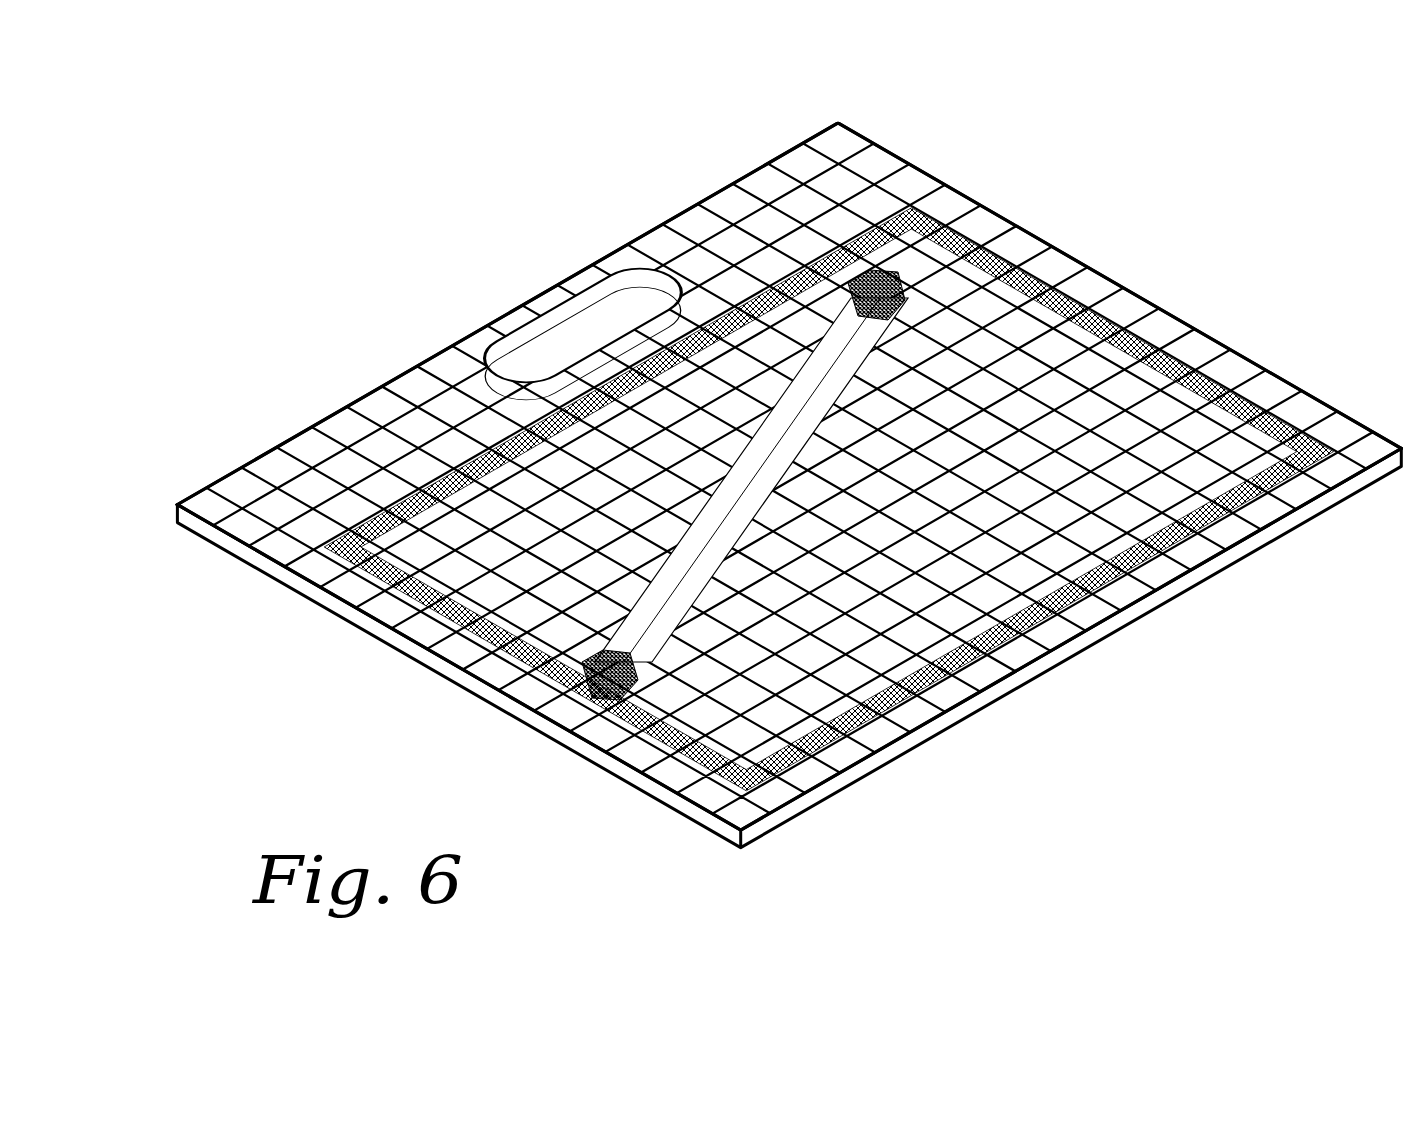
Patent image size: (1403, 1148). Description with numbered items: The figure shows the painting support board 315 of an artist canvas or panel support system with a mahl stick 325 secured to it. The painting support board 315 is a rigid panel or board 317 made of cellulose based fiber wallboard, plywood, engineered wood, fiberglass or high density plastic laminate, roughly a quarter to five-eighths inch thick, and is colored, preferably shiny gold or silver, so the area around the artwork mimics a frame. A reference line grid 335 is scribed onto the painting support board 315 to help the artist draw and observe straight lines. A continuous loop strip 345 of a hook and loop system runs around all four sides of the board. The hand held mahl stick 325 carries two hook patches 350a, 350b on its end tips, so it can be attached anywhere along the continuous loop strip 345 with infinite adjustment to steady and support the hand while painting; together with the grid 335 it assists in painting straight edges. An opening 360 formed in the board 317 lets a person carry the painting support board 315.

The painting support board 315 is at (823, 130).
The panel or board 317 is at (918, 737).
The mahl stick 325 is at (828, 330).
The reference line grid 335 is at (1058, 447).
The continuous loop strip 345 is at (1188, 385).
The hook patch 350a is at (573, 677).
The hook patch 350b is at (870, 273).
The opening 360 is at (627, 307).